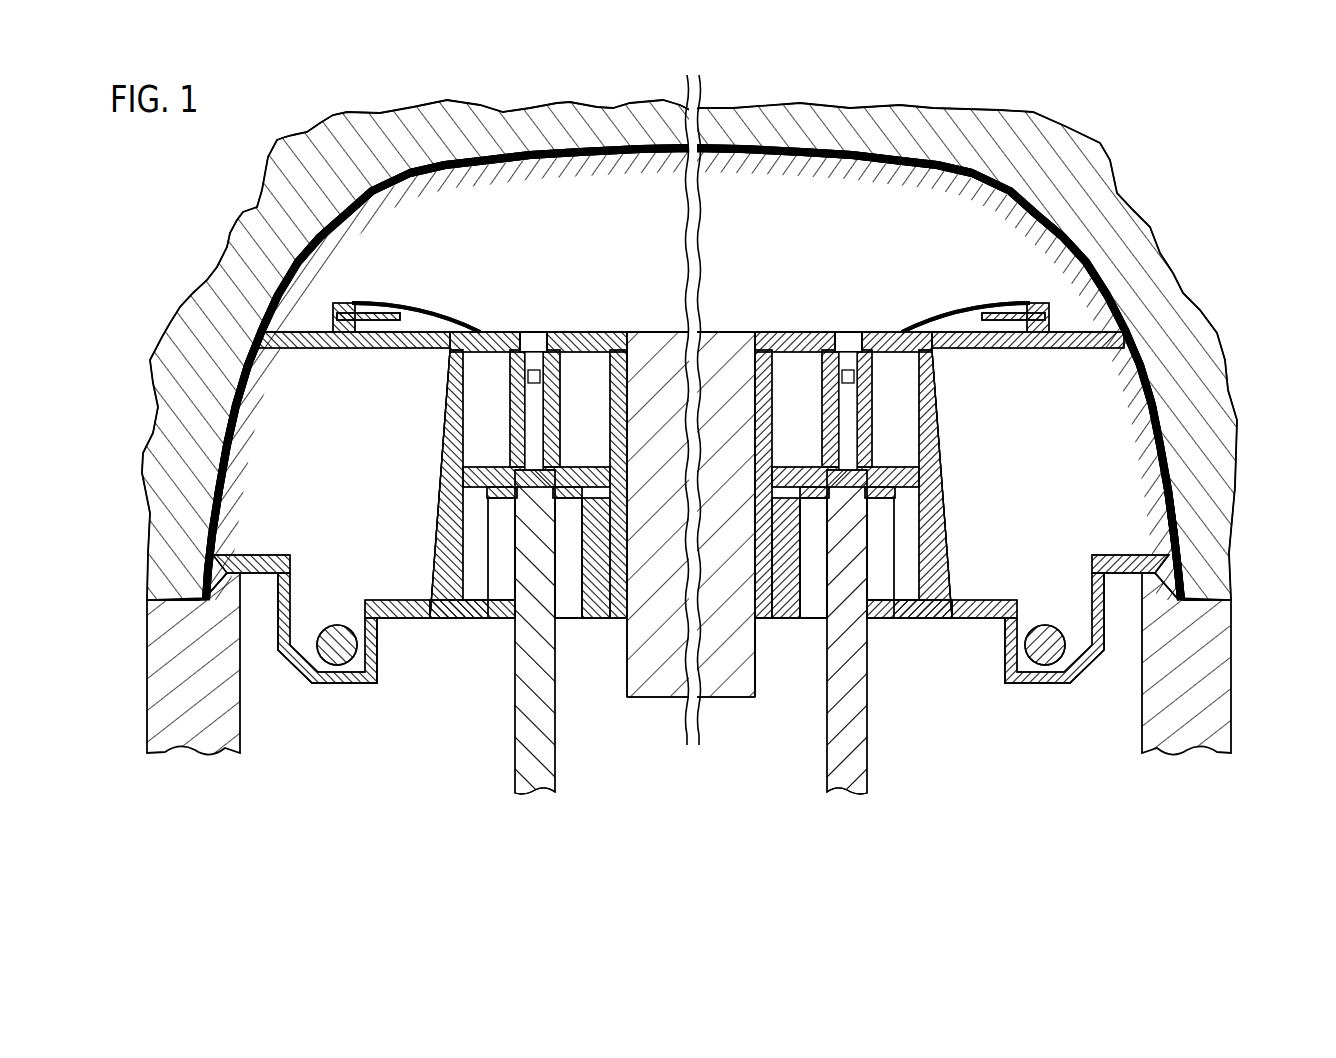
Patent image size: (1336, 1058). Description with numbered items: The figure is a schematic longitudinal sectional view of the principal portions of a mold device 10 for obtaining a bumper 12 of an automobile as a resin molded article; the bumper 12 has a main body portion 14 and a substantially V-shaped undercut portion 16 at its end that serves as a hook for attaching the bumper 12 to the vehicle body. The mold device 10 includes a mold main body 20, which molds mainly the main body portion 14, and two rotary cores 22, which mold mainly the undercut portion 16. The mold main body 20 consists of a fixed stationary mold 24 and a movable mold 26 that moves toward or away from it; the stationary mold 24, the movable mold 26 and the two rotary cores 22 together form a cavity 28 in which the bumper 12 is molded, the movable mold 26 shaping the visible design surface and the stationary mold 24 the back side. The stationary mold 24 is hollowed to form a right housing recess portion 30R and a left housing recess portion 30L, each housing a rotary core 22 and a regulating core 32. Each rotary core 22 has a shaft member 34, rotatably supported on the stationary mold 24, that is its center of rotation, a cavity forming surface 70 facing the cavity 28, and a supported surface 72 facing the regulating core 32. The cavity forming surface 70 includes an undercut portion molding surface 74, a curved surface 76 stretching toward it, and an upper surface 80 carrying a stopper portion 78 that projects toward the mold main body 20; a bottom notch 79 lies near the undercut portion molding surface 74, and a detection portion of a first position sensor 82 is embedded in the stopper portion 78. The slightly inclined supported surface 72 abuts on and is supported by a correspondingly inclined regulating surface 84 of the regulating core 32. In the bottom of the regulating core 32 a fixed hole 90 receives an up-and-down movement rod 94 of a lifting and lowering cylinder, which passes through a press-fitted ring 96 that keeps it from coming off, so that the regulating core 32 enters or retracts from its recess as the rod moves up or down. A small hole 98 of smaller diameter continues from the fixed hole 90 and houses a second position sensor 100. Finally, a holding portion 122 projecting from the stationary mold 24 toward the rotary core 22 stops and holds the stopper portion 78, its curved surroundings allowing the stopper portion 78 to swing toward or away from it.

The mold device 10 is at (1203, 113).
The bumper 12 is at (1278, 556).
The main body portion 14 is at (1172, 482).
The undercut portion 16 is at (1177, 603).
The mold main body 20 is at (162, 148).
The rotary core 22 is at (400, 608).
The stationary mold 24 is at (367, 226).
The movable mold 26 is at (293, 163).
The cavity 28 is at (843, 158).
The left housing recess portion 30L is at (425, 335).
The right housing recess portion 30R is at (953, 322).
The regulating core 32 is at (590, 346).
The shaft member 34 is at (338, 644).
The cavity forming surface 70 is at (232, 405).
The supported surface 72 is at (450, 395).
The undercut portion molding surface 74 is at (205, 597).
The curved surface 76 is at (247, 350).
The stopper portion 78 is at (348, 302).
The bottom notch 79 is at (266, 574).
The upper surface 80 is at (418, 330).
The first position sensor 82 is at (373, 303).
The regulating surface 84 is at (440, 458).
The fixed hole 90 is at (487, 600).
The up-and-down movement rod 94 is at (548, 729).
The press-fitted ring 96 is at (570, 498).
The small hole 98 is at (540, 413).
The second position sensor 100 is at (533, 343).
The holding portion 122 is at (340, 322).